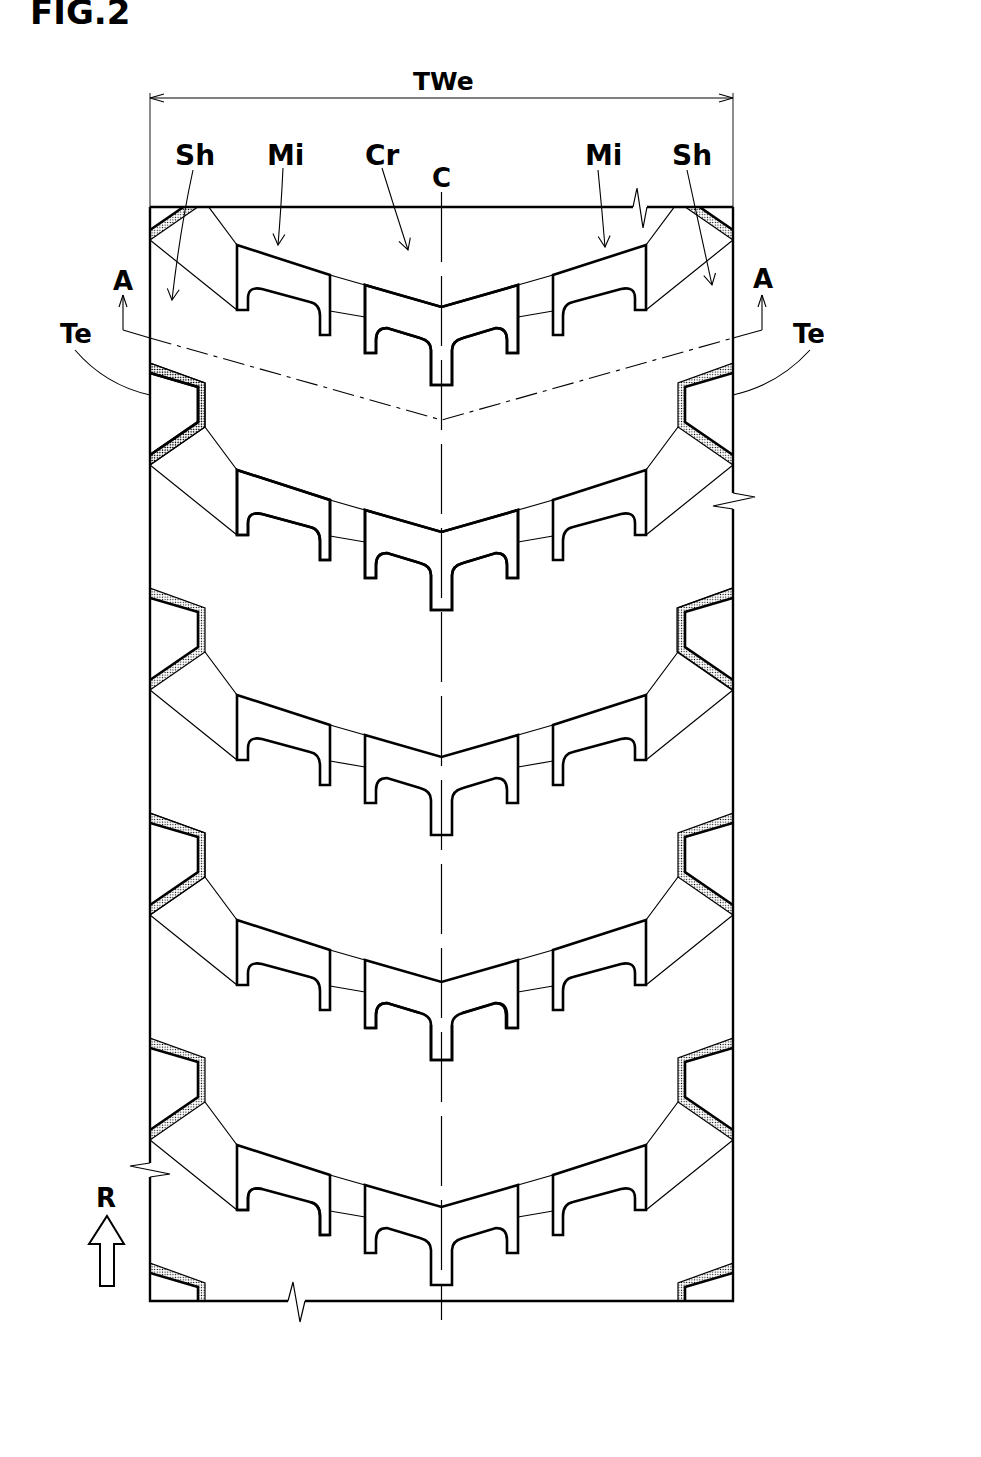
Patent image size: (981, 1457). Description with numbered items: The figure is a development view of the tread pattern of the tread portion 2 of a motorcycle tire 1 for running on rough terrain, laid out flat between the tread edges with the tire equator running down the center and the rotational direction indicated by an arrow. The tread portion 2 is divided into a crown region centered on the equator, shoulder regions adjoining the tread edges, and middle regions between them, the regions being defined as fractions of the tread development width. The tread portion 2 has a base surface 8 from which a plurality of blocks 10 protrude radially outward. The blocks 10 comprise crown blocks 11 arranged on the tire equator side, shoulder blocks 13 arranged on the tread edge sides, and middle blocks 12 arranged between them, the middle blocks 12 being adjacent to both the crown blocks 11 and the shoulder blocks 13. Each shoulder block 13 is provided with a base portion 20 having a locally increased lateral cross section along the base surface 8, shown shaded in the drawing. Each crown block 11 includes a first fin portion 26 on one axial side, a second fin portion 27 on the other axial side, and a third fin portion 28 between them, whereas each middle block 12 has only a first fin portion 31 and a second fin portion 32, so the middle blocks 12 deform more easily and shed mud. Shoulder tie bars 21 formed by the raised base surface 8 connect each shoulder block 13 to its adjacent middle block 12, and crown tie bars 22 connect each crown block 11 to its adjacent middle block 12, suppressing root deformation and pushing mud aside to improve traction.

The motorcycle tire 1 is at (543, 202).
The tread portion 2 is at (340, 203).
The base surface 8 is at (493, 242).
The blocks 10 is at (72, 437).
The crown blocks 11 is at (410, 540).
The middle blocks 12 is at (272, 500).
The shoulder blocks 13 is at (174, 411).
The base portion 20 is at (708, 597).
The shoulder tie bars 21 is at (205, 697).
The crown tie bars 22 is at (320, 785).
The first fin portion 26 is at (360, 1022).
The second fin portion 27 is at (512, 1020).
The third fin portion 28 is at (450, 1050).
The first fin portion 31 is at (243, 1200).
The second fin portion 32 is at (327, 1225).